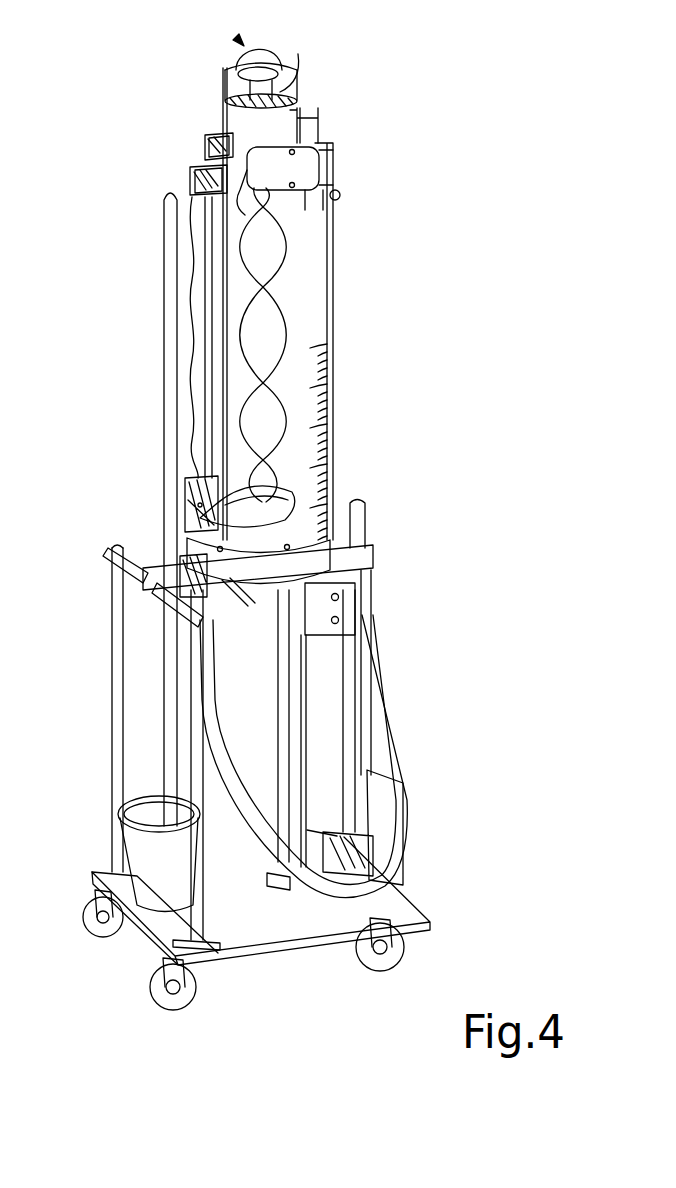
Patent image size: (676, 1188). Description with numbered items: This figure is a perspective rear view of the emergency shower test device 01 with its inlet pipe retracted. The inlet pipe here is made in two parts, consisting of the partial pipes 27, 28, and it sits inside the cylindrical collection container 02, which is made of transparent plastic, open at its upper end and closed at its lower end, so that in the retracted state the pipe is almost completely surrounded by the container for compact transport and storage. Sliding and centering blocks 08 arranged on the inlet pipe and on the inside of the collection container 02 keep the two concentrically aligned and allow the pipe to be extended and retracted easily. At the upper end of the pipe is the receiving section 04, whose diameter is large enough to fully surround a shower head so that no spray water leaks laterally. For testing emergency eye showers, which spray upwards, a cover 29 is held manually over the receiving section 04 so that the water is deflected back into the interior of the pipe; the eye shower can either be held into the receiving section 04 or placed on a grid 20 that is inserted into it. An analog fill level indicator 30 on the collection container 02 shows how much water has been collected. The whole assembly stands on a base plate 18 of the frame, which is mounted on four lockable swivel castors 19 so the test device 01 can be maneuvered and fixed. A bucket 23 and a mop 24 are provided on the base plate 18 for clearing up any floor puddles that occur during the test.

The emergency shower test device 01 is at (128, 84).
The collection container 02 is at (313, 348).
The receiving section 04 is at (298, 86).
The sliding and centering blocks 08 is at (190, 185).
The base plate 18 is at (252, 908).
The lockable swivel castors 19 is at (165, 972).
The grid 20 is at (298, 101).
The bucket 23 is at (153, 848).
The mop 24 is at (170, 712).
The partial pipe 27 is at (272, 128).
The partial pipe 28 is at (278, 170).
The cover 29 is at (270, 50).
The analog fill level indicator 30 is at (330, 448).